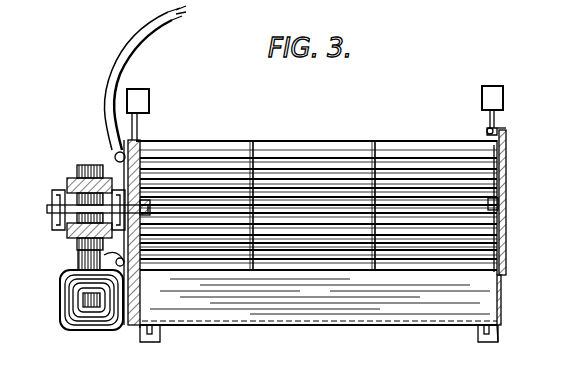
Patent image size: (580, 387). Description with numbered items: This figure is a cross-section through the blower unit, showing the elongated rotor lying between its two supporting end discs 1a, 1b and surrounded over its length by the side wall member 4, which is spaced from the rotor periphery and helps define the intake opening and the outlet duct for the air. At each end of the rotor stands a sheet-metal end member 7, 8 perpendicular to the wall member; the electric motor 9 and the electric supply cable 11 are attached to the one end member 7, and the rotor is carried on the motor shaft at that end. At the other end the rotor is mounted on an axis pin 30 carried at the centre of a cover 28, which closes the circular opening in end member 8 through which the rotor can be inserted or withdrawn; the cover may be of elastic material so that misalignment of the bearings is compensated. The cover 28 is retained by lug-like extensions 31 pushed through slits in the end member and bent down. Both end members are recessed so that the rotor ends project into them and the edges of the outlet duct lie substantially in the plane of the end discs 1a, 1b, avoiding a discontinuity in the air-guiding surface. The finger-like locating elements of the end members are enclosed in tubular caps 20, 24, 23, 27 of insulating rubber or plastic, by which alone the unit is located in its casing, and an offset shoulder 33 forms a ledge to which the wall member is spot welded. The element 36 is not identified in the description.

The supporting end disc 1a is at (141, 150).
The supporting end disc 1b is at (498, 168).
The side wall member 4 is at (326, 327).
The end member 7 is at (116, 152).
The end member 8 is at (502, 286).
The electric motor 9 is at (68, 322).
The electric supply cable 11 is at (116, 56).
The tubular cap 20 is at (493, 98).
The tubular cap 23 is at (482, 335).
The tubular cap 24 is at (143, 100).
The tubular cap 27 is at (160, 338).
The cover 28 is at (506, 138).
The axis pin 30 is at (498, 204).
The lug-like extension 31 is at (486, 129).
The offset shoulder 33 is at (500, 322).
The edge 36 is at (140, 326).